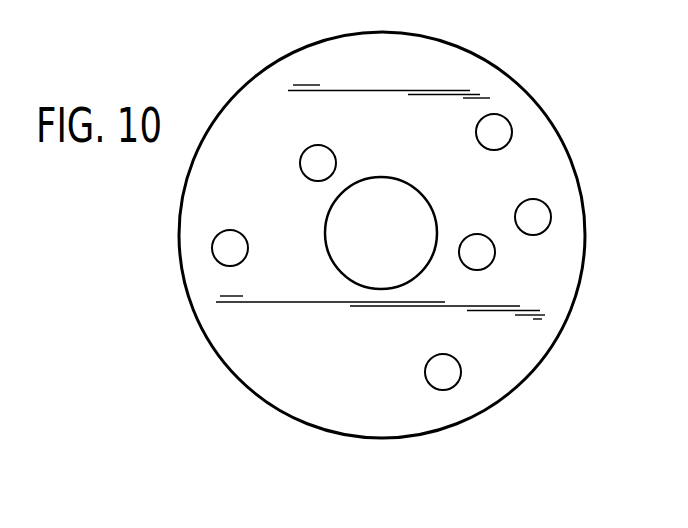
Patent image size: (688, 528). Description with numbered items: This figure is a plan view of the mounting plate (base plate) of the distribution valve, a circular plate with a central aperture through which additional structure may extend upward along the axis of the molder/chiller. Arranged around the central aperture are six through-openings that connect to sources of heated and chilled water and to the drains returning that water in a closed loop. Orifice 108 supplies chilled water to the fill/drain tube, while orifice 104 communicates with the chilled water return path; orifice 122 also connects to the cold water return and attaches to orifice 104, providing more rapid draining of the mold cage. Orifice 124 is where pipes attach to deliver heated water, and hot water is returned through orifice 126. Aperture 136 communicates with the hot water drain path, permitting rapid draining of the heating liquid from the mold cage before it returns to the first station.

The orifice 104 is at (323, 157).
The orifice 108 is at (218, 250).
The orifice 122 is at (505, 122).
The orifice 124 is at (526, 213).
The orifice 126 is at (468, 243).
The aperture 136 is at (430, 369).